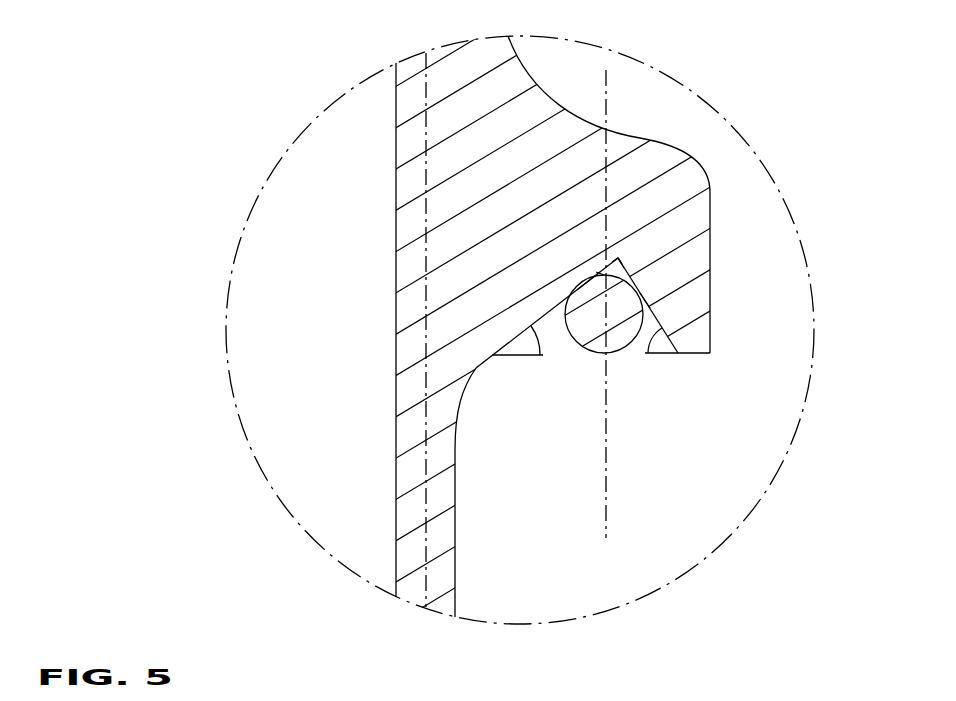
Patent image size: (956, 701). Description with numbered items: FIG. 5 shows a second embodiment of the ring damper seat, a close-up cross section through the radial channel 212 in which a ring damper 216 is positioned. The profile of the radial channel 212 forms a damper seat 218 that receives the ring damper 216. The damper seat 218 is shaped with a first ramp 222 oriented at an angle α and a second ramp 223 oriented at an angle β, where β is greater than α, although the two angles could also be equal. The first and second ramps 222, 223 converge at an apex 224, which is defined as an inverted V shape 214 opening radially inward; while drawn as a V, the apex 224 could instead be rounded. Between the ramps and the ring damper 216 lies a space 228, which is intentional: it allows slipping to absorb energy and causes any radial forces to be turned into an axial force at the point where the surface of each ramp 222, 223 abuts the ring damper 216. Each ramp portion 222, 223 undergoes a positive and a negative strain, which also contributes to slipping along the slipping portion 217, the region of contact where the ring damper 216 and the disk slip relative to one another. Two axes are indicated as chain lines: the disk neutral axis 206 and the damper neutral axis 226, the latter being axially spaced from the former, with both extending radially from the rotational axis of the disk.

The radial channel 212 is at (640, 113).
The inverted V shape 214 is at (630, 262).
The ring damper 216 is at (598, 338).
The slipping portion 217 is at (590, 283).
The damper seat 218 is at (596, 270).
The first ramp 222 is at (585, 278).
The second ramp 223 is at (645, 294).
The apex 224 is at (622, 256).
The damper neutral axis 226 is at (607, 495).
The space 228 is at (625, 270).
The disk neutral axis 206 is at (423, 412).